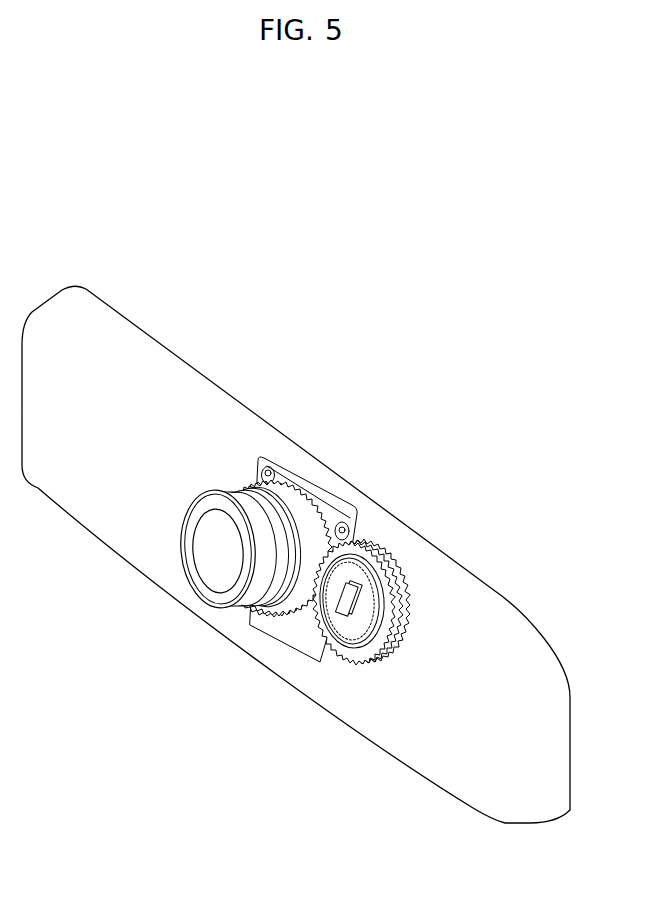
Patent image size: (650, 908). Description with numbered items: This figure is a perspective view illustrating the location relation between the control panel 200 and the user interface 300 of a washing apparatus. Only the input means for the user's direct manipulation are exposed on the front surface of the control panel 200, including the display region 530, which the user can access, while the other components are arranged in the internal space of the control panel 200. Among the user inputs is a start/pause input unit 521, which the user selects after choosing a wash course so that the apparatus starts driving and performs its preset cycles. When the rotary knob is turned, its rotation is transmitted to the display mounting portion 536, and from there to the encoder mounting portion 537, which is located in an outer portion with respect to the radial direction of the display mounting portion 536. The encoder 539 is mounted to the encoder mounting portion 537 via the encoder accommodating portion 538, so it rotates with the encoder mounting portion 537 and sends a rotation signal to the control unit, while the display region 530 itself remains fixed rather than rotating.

The control panel 200 is at (137, 349).
The user interface 300 is at (208, 469).
The start/pause input unit 521 is at (247, 620).
The display region 530 is at (205, 562).
The display mounting portion 536 is at (298, 502).
The encoder mounting portion 537 is at (372, 647).
The encoder accommodating portion 538 is at (363, 615).
The encoder 539 is at (343, 608).